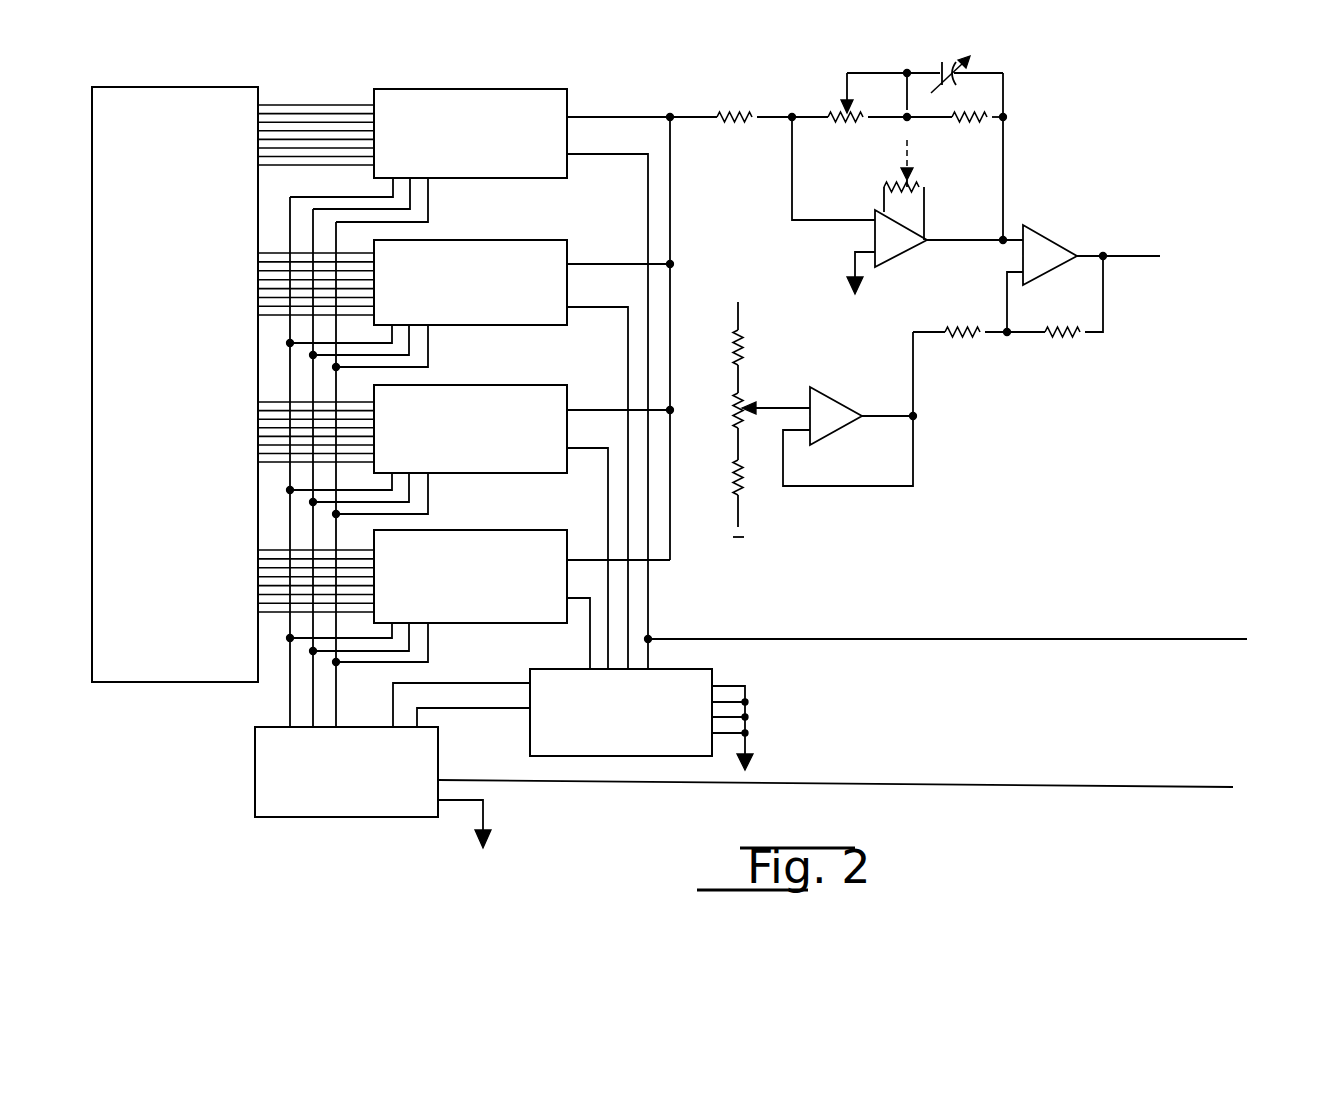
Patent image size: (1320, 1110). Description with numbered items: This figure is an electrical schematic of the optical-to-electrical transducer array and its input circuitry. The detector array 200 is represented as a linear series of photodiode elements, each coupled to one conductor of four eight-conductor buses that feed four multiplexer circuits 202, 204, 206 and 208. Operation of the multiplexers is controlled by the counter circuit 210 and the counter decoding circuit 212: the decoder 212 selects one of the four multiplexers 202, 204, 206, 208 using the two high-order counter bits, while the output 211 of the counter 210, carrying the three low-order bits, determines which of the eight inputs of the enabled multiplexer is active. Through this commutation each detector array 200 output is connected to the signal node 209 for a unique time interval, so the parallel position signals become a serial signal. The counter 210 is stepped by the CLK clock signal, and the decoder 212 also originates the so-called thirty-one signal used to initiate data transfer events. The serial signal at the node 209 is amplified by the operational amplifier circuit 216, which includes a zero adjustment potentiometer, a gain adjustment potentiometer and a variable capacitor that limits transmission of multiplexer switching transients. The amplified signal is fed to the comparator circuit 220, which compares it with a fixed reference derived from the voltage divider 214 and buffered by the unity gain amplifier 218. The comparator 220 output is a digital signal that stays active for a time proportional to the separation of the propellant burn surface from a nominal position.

The detector array 200 is at (170, 676).
The multiplexer circuit 202 is at (570, 103).
The multiplexer circuit 204 is at (567, 257).
The multiplexer circuit 206 is at (553, 387).
The multiplexer circuit 208 is at (540, 534).
The signal node 209 is at (674, 113).
The counter circuit 210 is at (350, 818).
The counter output 211 is at (282, 705).
The counter decoding circuit 212 is at (530, 742).
The voltage divider 214 is at (782, 359).
The operational amplifier circuit 216 is at (845, 188).
The unity gain amplifier 218 is at (837, 400).
The comparator circuit 220 is at (1090, 302).